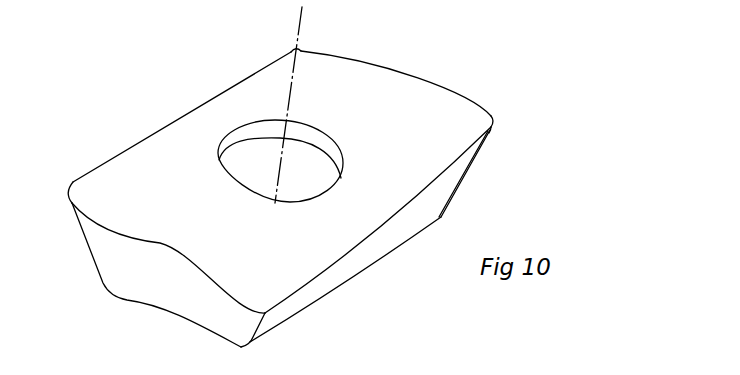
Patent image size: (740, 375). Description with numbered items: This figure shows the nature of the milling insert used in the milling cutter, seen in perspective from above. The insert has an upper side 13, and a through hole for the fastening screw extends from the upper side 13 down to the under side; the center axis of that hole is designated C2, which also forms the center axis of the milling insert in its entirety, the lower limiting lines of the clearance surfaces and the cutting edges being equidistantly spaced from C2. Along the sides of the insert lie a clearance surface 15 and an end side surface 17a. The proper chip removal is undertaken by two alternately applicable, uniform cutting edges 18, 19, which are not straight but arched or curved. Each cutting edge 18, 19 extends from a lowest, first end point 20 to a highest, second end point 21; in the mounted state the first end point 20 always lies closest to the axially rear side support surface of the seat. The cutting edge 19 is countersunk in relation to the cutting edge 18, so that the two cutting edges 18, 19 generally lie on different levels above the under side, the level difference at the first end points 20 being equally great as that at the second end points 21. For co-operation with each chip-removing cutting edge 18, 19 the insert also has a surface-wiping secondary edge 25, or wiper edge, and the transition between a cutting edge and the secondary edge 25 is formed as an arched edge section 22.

The upper side 13 is at (213, 226).
The clearance surface 15 is at (435, 221).
The end side surface 17a is at (175, 284).
The cutting edge 18 is at (187, 113).
The cutting edge 19 is at (357, 247).
The first end point 20 is at (290, 52).
The second end point 21 is at (71, 182).
The arched edge section 22 is at (494, 119).
The secondary edge 25 is at (450, 87).
The center axis C2 is at (300, 32).